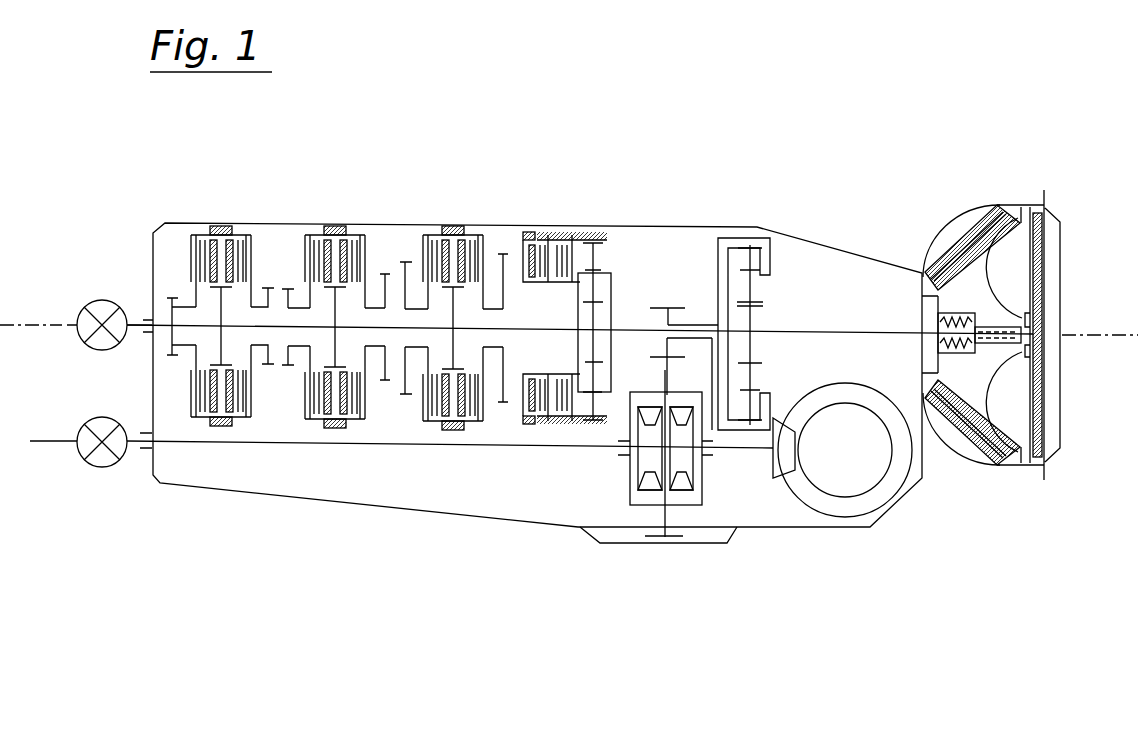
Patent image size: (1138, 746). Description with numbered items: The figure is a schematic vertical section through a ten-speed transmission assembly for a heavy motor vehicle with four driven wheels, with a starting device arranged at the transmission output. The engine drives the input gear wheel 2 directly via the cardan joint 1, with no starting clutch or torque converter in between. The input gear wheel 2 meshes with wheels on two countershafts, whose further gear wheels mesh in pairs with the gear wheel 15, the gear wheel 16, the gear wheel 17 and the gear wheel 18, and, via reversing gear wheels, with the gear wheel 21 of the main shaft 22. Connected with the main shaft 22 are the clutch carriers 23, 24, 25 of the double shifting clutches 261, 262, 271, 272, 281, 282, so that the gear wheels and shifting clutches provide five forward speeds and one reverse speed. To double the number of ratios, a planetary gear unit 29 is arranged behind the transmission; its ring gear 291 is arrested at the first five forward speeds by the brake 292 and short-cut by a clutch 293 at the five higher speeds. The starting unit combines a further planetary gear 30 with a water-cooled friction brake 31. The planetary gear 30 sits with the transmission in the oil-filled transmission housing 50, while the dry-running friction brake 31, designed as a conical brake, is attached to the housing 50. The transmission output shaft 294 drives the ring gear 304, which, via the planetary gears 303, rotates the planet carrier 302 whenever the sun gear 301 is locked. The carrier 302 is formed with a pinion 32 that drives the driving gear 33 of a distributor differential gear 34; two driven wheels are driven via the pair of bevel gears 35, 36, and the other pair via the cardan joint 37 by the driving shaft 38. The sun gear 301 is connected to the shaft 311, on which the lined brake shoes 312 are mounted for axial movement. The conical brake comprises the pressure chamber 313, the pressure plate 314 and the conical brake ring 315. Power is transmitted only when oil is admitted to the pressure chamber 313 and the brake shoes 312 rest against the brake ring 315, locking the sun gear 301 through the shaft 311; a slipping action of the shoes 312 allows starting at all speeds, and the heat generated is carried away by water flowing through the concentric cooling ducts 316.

The cardan joint 1 is at (88, 322).
The input gear wheel 2 is at (172, 317).
The gear wheel 15 is at (257, 297).
The gear wheel 16 is at (292, 353).
The gear wheel 17 is at (387, 288).
The gear wheel 18 is at (403, 373).
The gear wheel of the main shaft 21 is at (503, 288).
The main shaft 22 is at (520, 335).
The clutch carrier 23 is at (220, 297).
The clutch carrier 24 is at (327, 303).
The clutch carrier 25 is at (453, 307).
The double shifting clutch 261 is at (200, 240).
The double shifting clutch 262 is at (240, 240).
The double shifting clutch 271 is at (320, 240).
The double shifting clutch 272 is at (355, 240).
The double shifting clutch 281 is at (433, 240).
The double shifting clutch 282 is at (475, 240).
The planetary gear unit 29 is at (596, 255).
The ring gear 291 is at (612, 240).
The brake 292 is at (583, 232).
The clutch 293 is at (553, 235).
The transmission output shaft 294 is at (632, 330).
The planetary gear 30 is at (758, 258).
The sun gear 301 is at (758, 322).
The planet carrier 302 is at (777, 248).
The planetary gears 303 is at (748, 380).
The ring gear 304 is at (728, 255).
The friction brake 31 is at (1013, 278).
The shaft 311 is at (872, 333).
The lined brake shoes 312 is at (993, 365).
The pressure chamber 313 is at (1043, 398).
The pressure plate 314 is at (1033, 430).
The conical brake ring 315 is at (980, 420).
The cooling ducts 316 is at (953, 410).
The pinion 32 is at (660, 307).
The driving gear 33 is at (658, 512).
The distributor differential gear 34 is at (677, 458).
The bevel gear 35 is at (790, 473).
The bevel gear 36 is at (880, 495).
The cardan joint 37 is at (118, 445).
The driving shaft 38 is at (47, 442).
The transmission housing 50 is at (278, 497).